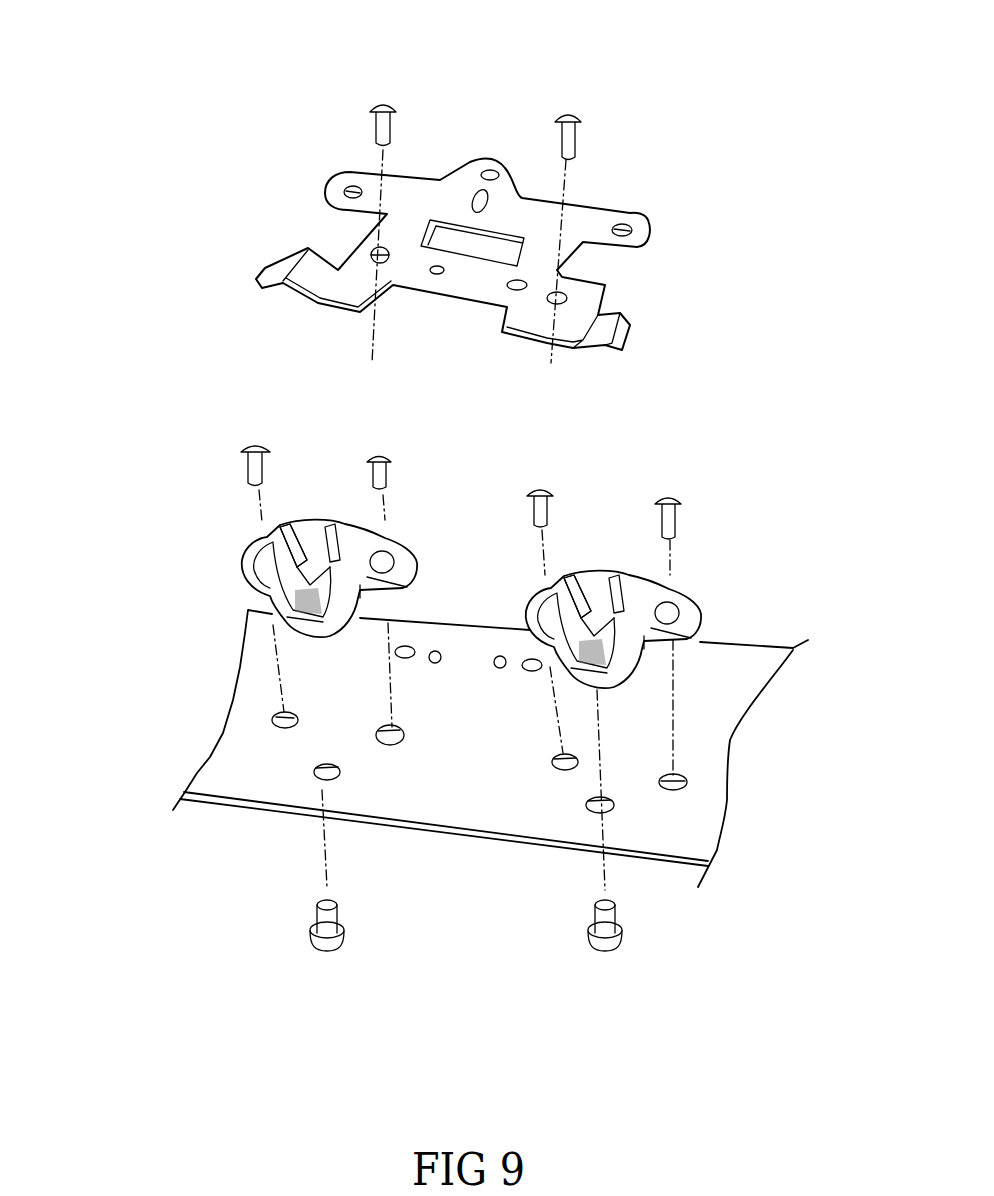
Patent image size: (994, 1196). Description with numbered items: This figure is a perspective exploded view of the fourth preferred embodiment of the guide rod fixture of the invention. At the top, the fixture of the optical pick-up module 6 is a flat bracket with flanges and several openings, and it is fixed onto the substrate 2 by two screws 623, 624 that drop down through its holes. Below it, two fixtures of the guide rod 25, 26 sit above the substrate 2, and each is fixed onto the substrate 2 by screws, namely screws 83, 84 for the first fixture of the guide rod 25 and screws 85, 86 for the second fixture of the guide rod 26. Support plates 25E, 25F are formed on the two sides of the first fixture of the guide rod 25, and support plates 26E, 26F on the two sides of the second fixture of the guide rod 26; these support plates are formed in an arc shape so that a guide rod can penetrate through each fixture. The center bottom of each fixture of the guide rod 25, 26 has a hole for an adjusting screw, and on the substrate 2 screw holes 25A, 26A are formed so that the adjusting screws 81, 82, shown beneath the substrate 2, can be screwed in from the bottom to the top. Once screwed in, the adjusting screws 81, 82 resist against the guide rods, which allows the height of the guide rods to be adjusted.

The substrate 2 is at (697, 827).
The fixture of the optical pick-up module 6 is at (622, 177).
The screw 623 is at (375, 100).
The screw 624 is at (580, 107).
The fixture of the guide rod 25 is at (237, 588).
The screw hole 25A is at (313, 768).
The support plate 25E is at (267, 543).
The support plate 25F is at (380, 533).
The fixture of the guide rod 26 is at (713, 620).
The screw hole 26A is at (583, 813).
The support plate 26E is at (537, 615).
The support plate 26F is at (630, 597).
The adjusting screw 81 is at (607, 951).
The adjusting screw 82 is at (330, 951).
The screw 83 is at (248, 442).
The screw 84 is at (388, 450).
The screw 85 is at (545, 480).
The screw 86 is at (680, 498).